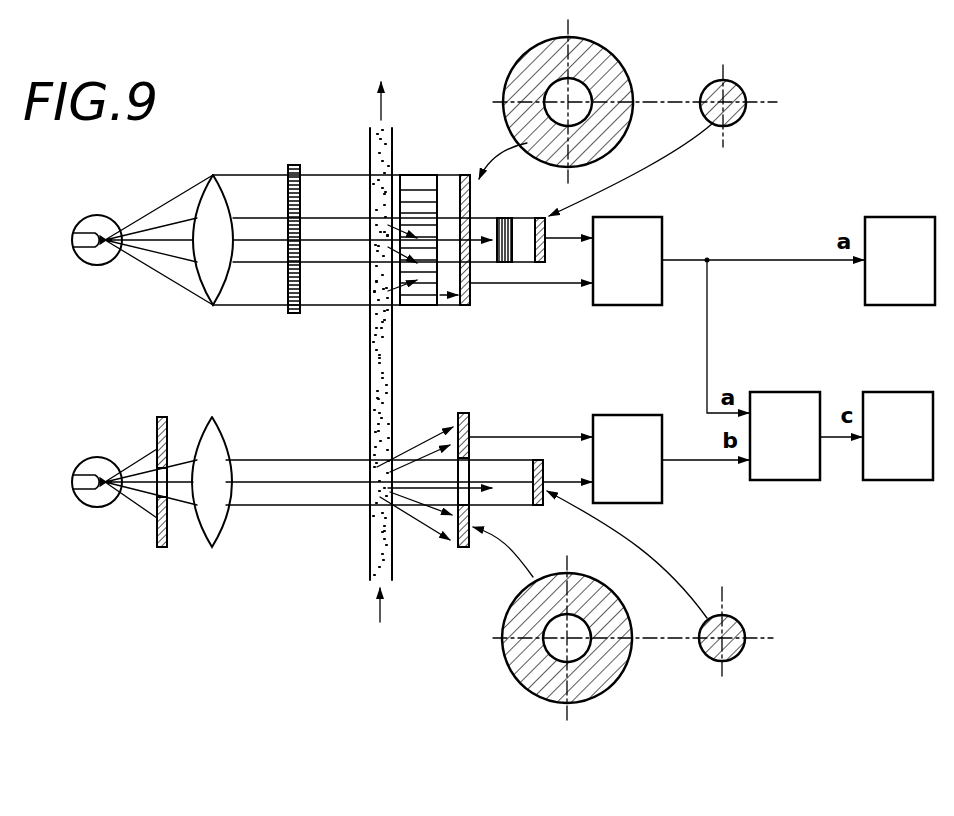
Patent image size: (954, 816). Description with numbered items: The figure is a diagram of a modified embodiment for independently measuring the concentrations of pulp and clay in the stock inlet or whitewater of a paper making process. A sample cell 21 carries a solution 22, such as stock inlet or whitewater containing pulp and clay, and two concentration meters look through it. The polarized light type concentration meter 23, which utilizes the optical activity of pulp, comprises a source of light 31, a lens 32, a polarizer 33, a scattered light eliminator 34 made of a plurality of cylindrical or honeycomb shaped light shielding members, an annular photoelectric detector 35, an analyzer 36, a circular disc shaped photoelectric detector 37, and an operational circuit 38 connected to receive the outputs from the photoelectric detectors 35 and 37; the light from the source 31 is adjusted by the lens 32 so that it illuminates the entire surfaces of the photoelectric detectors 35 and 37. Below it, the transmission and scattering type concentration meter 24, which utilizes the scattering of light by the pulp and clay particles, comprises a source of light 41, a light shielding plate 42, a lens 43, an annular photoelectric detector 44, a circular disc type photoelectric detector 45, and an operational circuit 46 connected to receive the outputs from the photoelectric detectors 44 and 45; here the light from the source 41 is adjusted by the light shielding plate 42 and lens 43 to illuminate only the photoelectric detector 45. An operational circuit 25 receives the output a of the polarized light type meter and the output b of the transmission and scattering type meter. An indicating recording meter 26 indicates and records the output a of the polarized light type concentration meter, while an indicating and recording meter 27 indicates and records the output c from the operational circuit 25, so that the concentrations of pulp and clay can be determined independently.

The sample cell 21 is at (369, 382).
The solution 22 is at (392, 373).
The polarized light type concentration meter 23 is at (276, 128).
The transmission and scattering type concentration meter 24 is at (288, 553).
The operational circuit 25 is at (785, 436).
The indicating recording meter 26 is at (900, 261).
The indicating and recording meter 27 is at (898, 436).
The source of light 31 is at (97, 215).
The lens 32 is at (213, 174).
The polarizer 33 is at (294, 164).
The scattered light eliminator 34 is at (412, 174).
The annular photoelectric detector 35 is at (464, 174).
The analyzer 36 is at (505, 217).
The circular disc shaped photoelectric detector 37 is at (542, 217).
The operational circuit 38 is at (627, 261).
The source of light 41 is at (93, 506).
The light shielding plate 42 is at (162, 549).
The lens 43 is at (212, 549).
The annular photoelectric detector 44 is at (464, 549).
The circular disc type photoelectric detector 45 is at (540, 507).
The operational circuit 46 is at (627, 459).